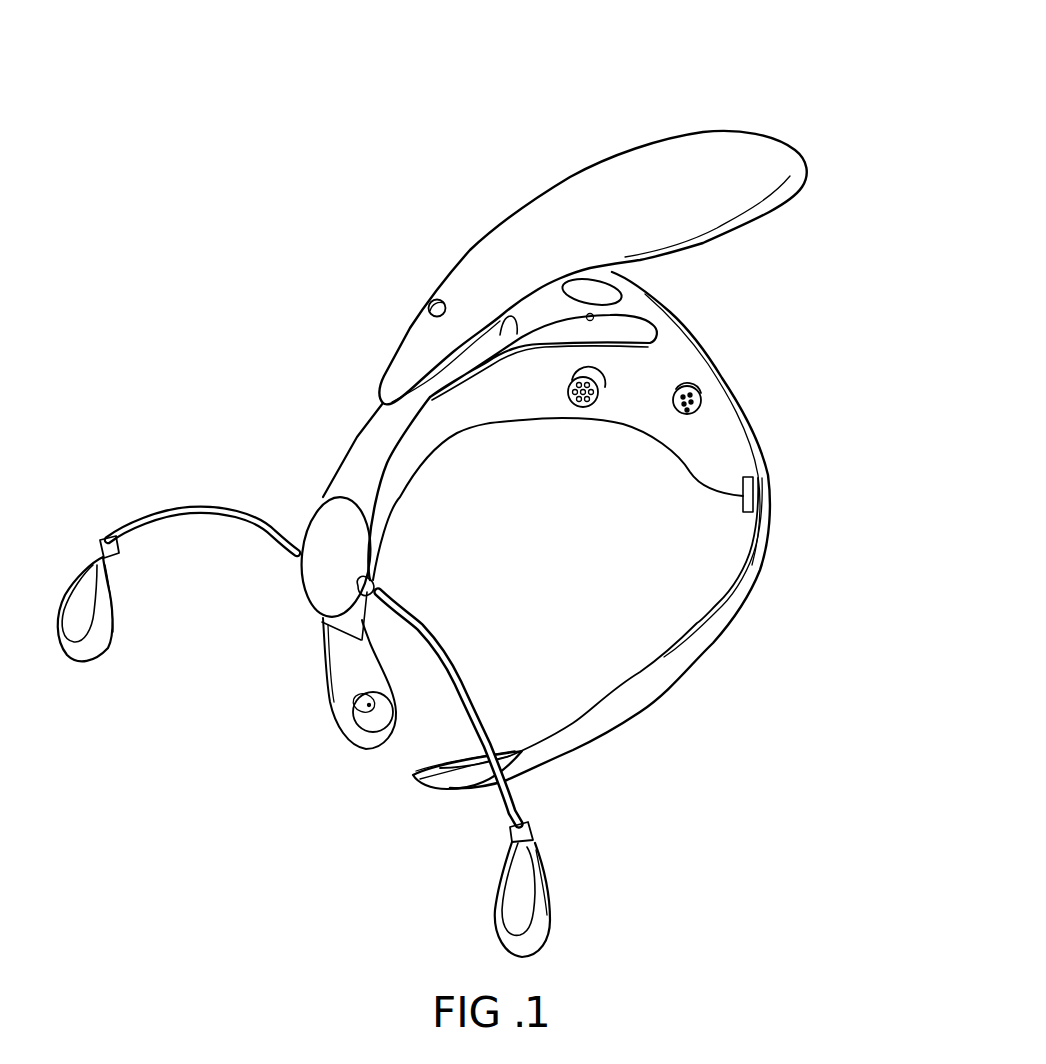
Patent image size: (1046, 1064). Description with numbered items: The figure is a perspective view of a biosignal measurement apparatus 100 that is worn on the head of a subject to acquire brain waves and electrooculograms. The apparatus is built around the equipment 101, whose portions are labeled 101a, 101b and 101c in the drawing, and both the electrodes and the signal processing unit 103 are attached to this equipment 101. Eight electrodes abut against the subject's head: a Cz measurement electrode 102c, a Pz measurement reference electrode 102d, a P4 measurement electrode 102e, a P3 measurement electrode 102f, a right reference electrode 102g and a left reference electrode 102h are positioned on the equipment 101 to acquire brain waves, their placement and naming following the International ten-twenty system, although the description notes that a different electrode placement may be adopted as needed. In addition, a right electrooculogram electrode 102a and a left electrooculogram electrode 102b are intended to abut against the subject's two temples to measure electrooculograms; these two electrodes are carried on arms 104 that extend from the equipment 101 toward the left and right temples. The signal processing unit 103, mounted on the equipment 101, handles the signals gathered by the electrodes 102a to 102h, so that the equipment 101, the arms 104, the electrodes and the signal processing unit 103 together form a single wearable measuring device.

The biosignal measurement apparatus 100 is at (627, 87).
The equipment 101 is at (710, 354).
The arm portion of frame 101a is at (370, 440).
The inner ring portion of frame 101b is at (420, 440).
The band portion of frame 101c is at (677, 667).
The right electrooculogram (EOG) electrode 102a is at (107, 636).
The left EOG electrode 102b is at (538, 920).
The Cz measurement electrode 102c is at (588, 322).
The Pz measurement reference electrode 102d is at (680, 415).
The P4 measurement electrode 102e is at (574, 407).
The P3 measurement electrode 102f is at (744, 497).
The right reference electrode 102g is at (363, 710).
The left reference electrode 102h is at (433, 767).
The signal processing unit 103 is at (537, 231).
The arms 104 is at (207, 513).